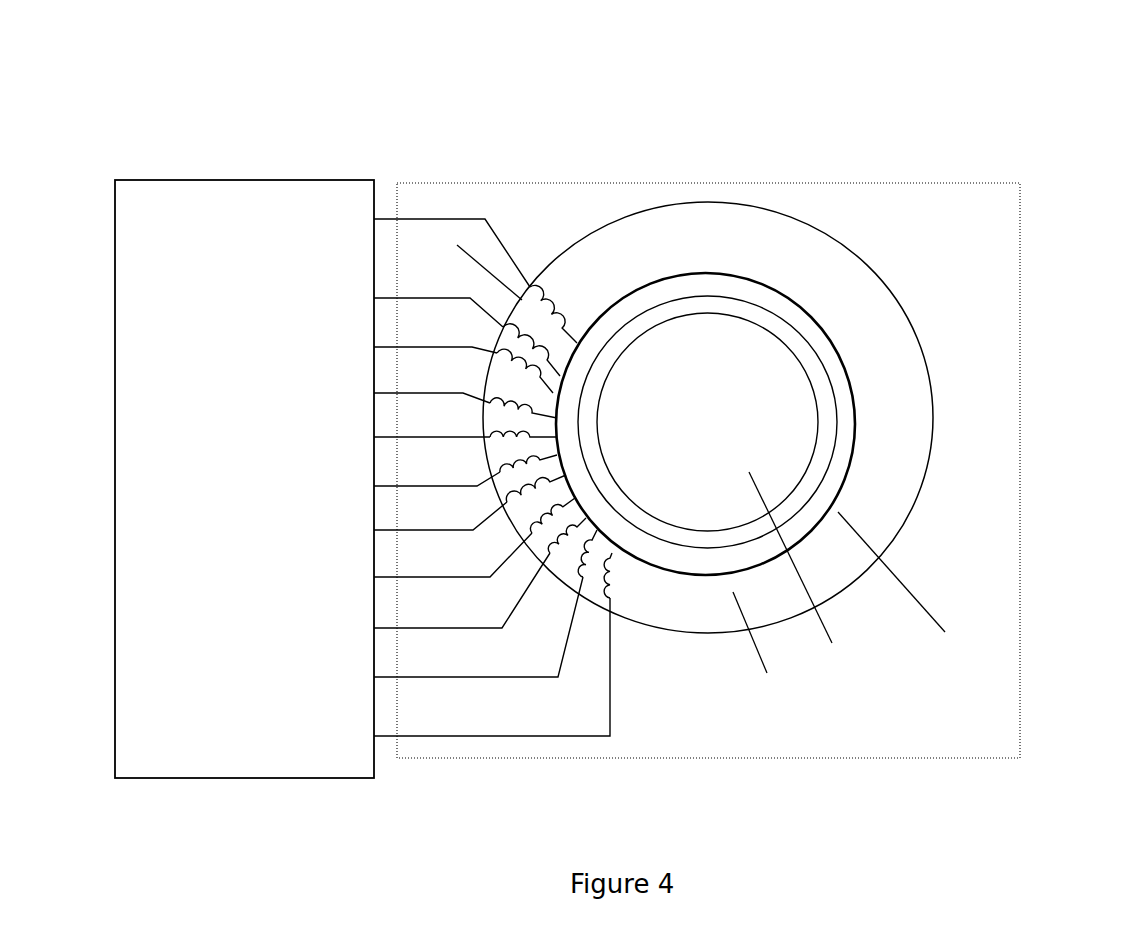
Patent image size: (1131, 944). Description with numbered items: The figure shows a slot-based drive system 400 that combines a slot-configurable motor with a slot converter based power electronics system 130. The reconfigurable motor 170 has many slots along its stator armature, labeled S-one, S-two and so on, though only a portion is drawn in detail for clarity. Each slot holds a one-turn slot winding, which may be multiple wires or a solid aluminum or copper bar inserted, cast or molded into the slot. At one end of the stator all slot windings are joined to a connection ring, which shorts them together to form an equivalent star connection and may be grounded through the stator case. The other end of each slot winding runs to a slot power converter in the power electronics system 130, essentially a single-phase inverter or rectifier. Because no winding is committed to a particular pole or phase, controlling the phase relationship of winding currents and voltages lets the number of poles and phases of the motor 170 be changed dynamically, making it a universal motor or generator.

The electric machine system 400 is at (1063, 115).
The power electronics system with slot converters 130 is at (267, 180).
The reconfigurable motor 170 is at (723, 763).